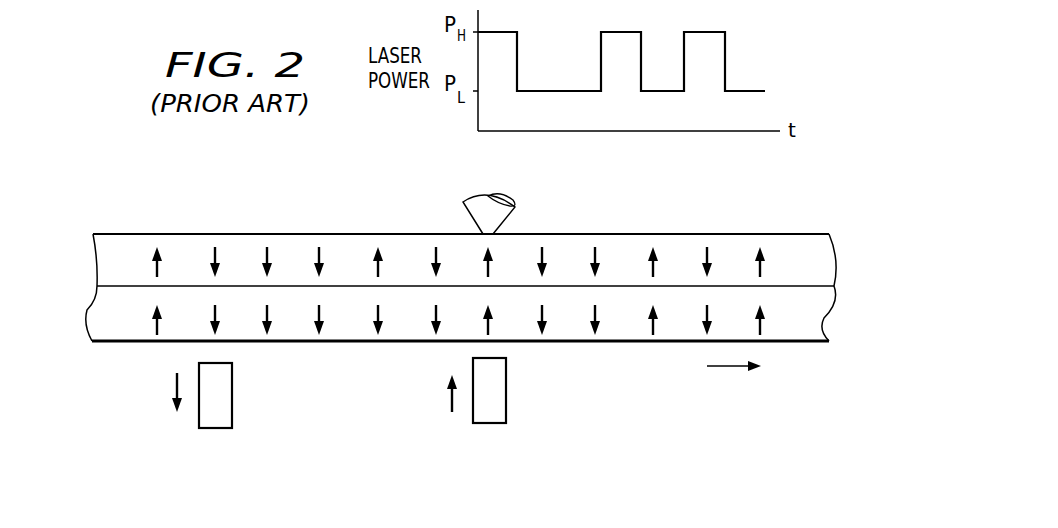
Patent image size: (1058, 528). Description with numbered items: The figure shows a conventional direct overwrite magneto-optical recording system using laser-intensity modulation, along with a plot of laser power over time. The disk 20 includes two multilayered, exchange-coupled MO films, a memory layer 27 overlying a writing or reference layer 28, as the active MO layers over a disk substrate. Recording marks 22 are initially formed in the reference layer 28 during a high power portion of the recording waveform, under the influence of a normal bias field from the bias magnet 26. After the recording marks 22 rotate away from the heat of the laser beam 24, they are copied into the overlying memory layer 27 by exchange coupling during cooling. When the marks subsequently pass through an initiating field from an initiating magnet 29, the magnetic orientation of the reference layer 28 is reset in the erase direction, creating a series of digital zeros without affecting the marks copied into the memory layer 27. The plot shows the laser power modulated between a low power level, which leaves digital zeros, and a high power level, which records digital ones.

The disk 20 is at (155, 177).
The recording marks 22 is at (654, 333).
The laser beam 24 is at (513, 206).
The bias magnet 26 is at (506, 385).
The memory layer 27 is at (97, 263).
The reference layer 28 is at (86, 313).
The initiating magnet 29 is at (232, 393).